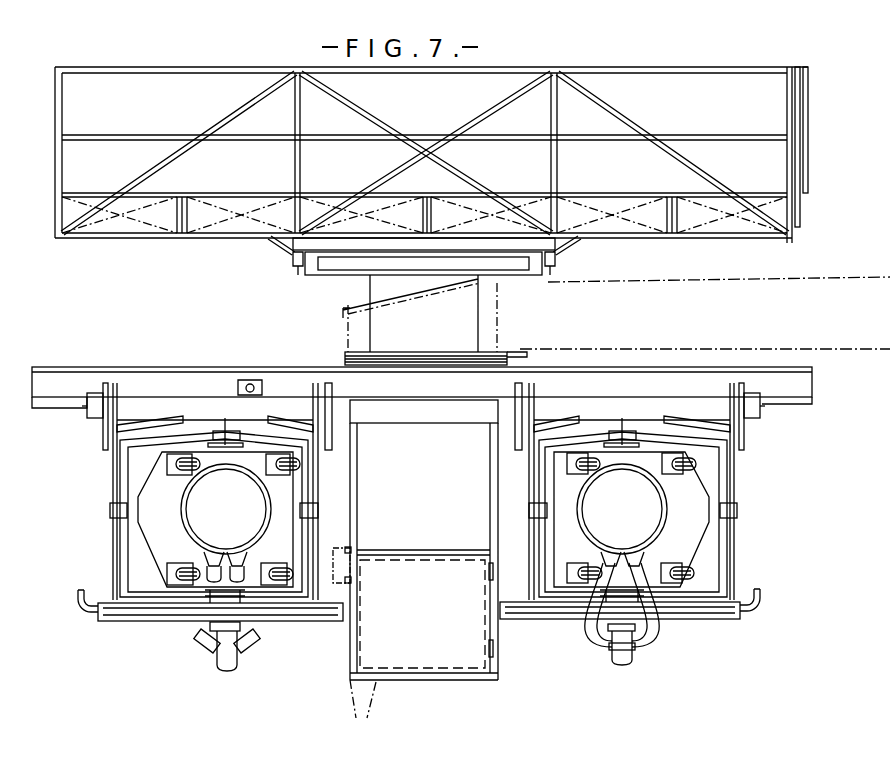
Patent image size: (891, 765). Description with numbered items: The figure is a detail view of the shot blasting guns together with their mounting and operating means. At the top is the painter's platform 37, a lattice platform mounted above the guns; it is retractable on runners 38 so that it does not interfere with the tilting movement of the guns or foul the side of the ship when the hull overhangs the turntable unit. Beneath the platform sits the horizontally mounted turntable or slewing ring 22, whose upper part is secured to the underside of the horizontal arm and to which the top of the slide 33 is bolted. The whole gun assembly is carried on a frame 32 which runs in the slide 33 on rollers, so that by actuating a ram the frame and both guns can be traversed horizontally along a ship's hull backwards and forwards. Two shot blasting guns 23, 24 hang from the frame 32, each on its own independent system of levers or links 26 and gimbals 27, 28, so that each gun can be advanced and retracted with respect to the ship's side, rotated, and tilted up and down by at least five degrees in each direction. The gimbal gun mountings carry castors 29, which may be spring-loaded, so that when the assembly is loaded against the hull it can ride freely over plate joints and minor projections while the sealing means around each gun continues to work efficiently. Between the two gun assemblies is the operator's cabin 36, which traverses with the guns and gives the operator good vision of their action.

The turntable or slewing ring 22 is at (463, 325).
The shot blasting gun 23 is at (212, 520).
The shot blasting gun 24 is at (608, 520).
The levers or links 26 is at (113, 463).
The gimbal 27 is at (115, 508).
The gimbal 28 is at (225, 432).
The castors 29 is at (287, 567).
The frame 32 is at (180, 408).
The slide 33 is at (205, 383).
The operator's cabin 36 is at (457, 460).
The painter's platform 37 is at (228, 233).
The runners 38 is at (297, 270).